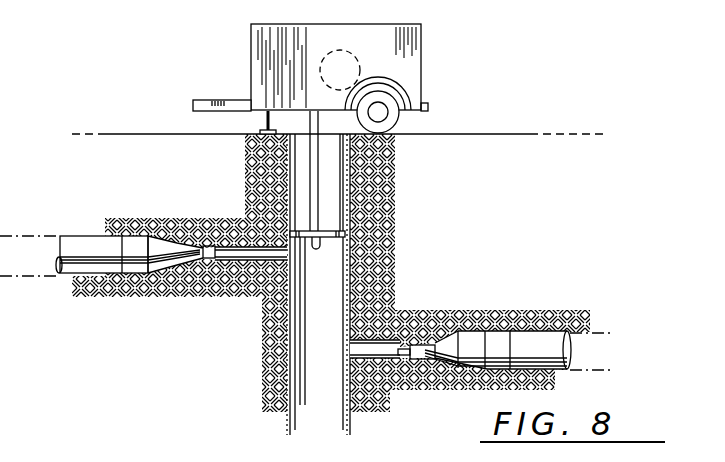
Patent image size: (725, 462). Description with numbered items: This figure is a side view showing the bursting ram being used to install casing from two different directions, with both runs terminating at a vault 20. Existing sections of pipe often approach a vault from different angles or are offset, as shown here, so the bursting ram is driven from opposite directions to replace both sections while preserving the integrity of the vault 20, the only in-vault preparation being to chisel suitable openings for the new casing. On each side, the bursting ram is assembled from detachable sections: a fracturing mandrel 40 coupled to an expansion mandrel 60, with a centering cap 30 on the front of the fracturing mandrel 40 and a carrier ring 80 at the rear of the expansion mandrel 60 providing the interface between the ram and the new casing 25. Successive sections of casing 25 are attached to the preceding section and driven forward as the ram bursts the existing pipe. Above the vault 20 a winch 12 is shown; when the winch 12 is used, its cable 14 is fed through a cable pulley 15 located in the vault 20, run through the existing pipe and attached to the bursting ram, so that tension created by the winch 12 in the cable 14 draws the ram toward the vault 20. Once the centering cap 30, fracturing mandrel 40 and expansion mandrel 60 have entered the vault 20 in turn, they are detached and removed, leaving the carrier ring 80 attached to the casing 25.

The winch 12 is at (421, 58).
The vault 20 is at (335, 163).
The cable 14 is at (318, 190).
The cable pulley 15 is at (343, 233).
The casing 25 is at (98, 248).
The carrier ring 80 is at (138, 242).
The fracturing mandrel 40 is at (185, 248).
The expansion mandrel 60 is at (157, 257).
The centering cap 30 is at (227, 265).